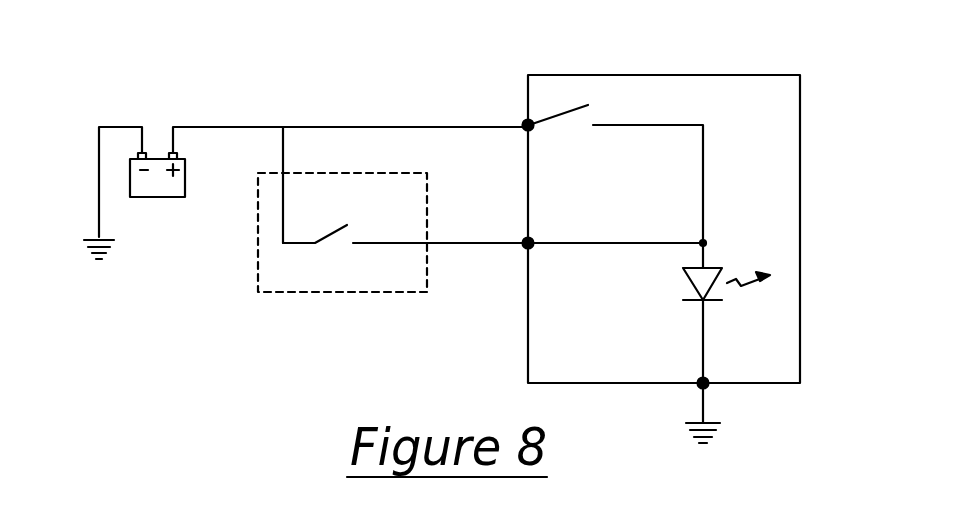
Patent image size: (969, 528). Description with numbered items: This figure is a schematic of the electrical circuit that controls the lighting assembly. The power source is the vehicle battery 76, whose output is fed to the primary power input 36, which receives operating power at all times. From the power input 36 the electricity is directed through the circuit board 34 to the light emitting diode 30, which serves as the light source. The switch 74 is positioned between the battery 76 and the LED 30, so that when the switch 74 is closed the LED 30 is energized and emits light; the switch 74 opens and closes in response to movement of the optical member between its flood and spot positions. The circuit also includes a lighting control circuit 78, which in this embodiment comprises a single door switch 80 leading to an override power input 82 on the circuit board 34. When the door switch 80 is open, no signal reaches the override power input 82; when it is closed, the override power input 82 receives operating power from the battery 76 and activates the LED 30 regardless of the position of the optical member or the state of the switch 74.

The light emitting diode 30 is at (687, 282).
The circuit board 34 is at (753, 75).
The power input 36 is at (524, 121).
The switch 74 is at (571, 122).
The vehicle battery 76 is at (163, 197).
The lighting control circuit 78 is at (379, 293).
The door switch 80 is at (327, 235).
The override power input 82 is at (524, 248).